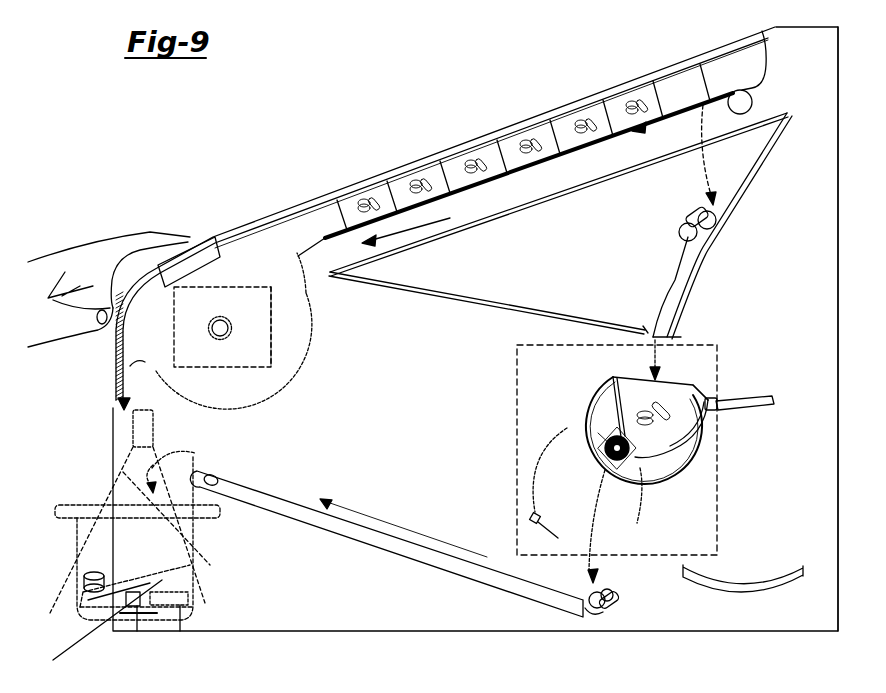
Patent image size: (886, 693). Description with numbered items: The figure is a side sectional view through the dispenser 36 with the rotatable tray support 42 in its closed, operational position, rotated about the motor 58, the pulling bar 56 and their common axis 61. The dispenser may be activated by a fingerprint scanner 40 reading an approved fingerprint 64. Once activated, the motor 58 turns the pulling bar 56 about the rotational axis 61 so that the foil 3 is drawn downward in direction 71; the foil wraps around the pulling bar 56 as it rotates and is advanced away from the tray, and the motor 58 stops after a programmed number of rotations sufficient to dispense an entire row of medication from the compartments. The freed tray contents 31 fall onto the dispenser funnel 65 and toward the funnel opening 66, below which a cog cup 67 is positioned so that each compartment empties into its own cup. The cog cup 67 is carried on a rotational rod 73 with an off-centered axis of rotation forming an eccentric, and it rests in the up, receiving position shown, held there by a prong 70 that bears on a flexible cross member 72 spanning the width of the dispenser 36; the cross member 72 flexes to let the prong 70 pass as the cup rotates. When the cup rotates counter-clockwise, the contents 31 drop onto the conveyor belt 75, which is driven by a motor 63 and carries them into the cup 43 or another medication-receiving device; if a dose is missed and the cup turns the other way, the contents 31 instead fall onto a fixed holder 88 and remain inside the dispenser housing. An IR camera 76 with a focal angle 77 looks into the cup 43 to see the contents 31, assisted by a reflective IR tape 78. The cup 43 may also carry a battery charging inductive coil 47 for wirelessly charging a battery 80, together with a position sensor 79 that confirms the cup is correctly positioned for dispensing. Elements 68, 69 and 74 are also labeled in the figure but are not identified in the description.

The foil 3 is at (219, 316).
The tray contents 31 is at (667, 219).
The dispenser 36 is at (820, 55).
The fingerprint scanner 40 is at (208, 268).
The rotatable tray support 42 is at (340, 180).
The cup 43 is at (88, 502).
The battery charging inductive coil 47 is at (147, 615).
The pulling bar 56 is at (257, 327).
The motor 58 is at (222, 327).
The common axis 61 is at (227, 328).
The motor 63 is at (198, 463).
The approved fingerprint 64 is at (190, 236).
The dispenser funnel 65 is at (490, 295).
The funnel opening 66 is at (683, 326).
The cog cup 67 is at (710, 450).
The latch 68 is at (740, 422).
The pivot 69 is at (598, 433).
The prong 70 is at (708, 398).
The direction 71 is at (686, 116).
The cross member 72 is at (773, 403).
The rotational rod 73 is at (629, 457).
The rotation path 74 is at (542, 450).
The conveyor belt 75 is at (290, 472).
The IR camera 76 is at (156, 425).
The focal angle 77 is at (123, 472).
The reflective IR tape 78 is at (108, 598).
The position sensor 79 is at (137, 607).
The battery 80 is at (173, 608).
The fixed holder 88 is at (770, 587).